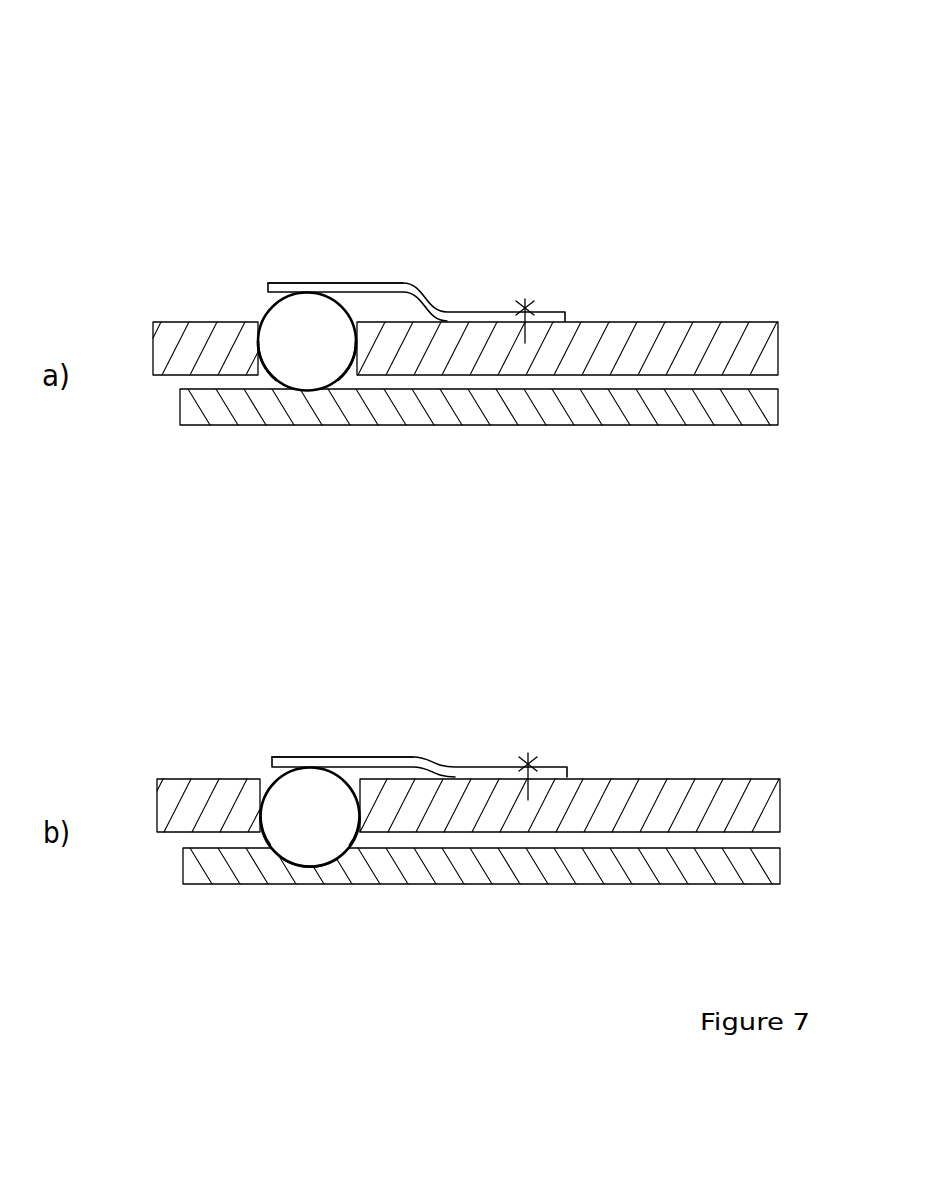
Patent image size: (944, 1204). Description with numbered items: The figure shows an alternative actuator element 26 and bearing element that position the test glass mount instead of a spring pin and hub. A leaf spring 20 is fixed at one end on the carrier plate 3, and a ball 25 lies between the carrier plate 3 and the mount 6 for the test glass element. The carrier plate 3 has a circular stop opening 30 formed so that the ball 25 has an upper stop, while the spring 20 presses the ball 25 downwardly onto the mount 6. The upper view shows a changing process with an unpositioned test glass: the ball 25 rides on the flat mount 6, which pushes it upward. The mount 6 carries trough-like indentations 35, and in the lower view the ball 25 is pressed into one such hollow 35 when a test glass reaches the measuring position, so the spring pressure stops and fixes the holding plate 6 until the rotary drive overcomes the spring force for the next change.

In FIG. 7a, the carrier plate 3 is at (617, 340).
In FIG. 7b, the carrier plate 3 is at (619, 797).
In FIG. 7a, the mount 6 is at (617, 402).
In FIG. 7b, the mount 6 is at (619, 857).
In FIG. 7a, the leaf spring 20 is at (402, 283).
In FIG. 7b, the leaf spring 20 is at (404, 757).
In FIG. 7a, the ball 25 is at (287, 315).
In FIG. 7b, the ball 25 is at (273, 760).
In FIG. 7a, the actuator element 26 is at (323, 280).
In FIG. 7b, the actuator element 26 is at (357, 757).
In FIG. 7a, the stop opening 30 is at (348, 367).
In FIG. 7b, the stop opening 30 is at (358, 812).
In FIG. 7b, the bearing element, indentation 35 is at (303, 868).